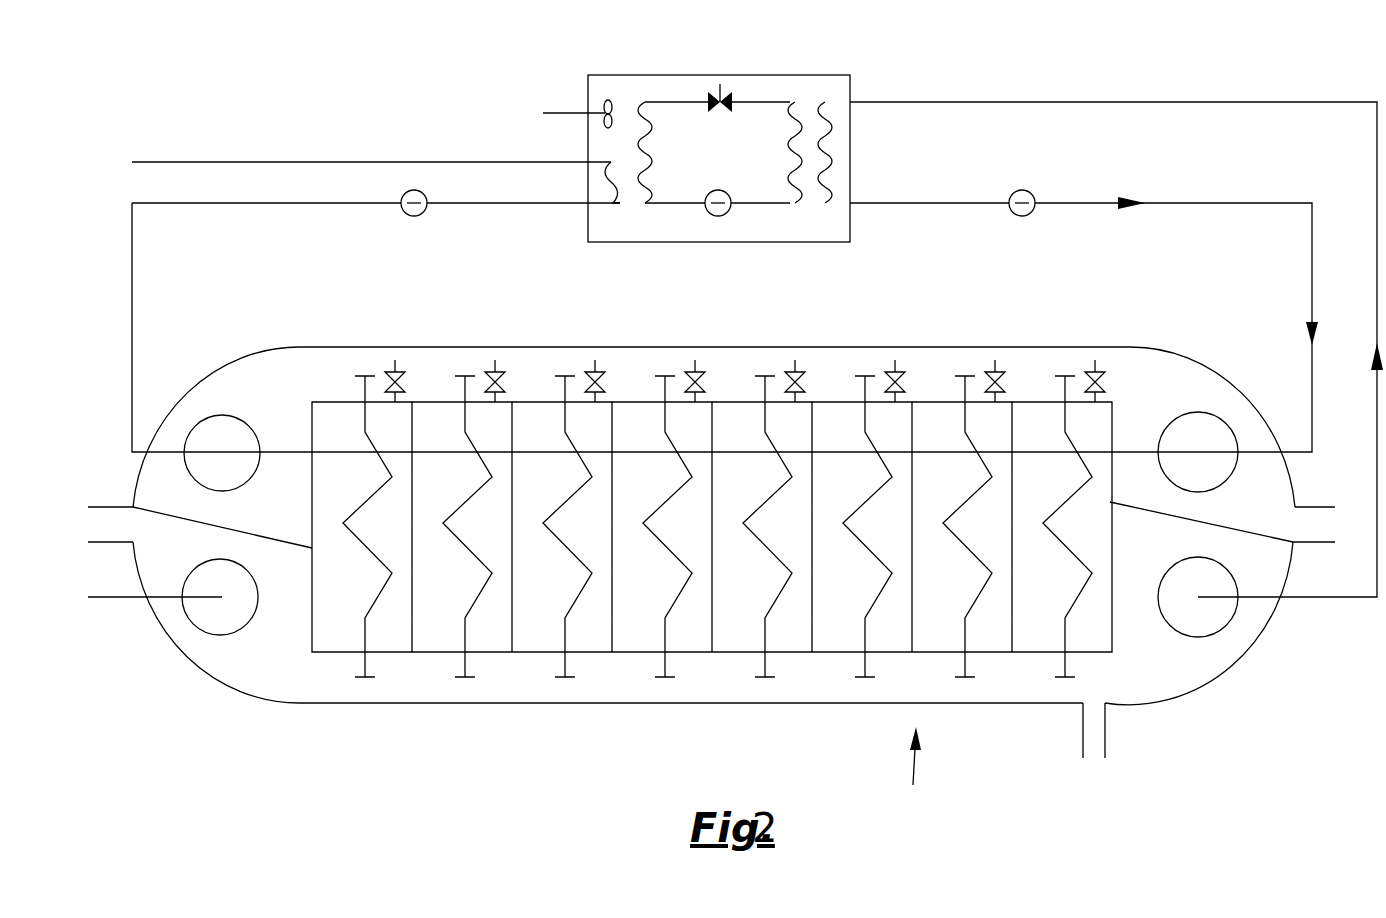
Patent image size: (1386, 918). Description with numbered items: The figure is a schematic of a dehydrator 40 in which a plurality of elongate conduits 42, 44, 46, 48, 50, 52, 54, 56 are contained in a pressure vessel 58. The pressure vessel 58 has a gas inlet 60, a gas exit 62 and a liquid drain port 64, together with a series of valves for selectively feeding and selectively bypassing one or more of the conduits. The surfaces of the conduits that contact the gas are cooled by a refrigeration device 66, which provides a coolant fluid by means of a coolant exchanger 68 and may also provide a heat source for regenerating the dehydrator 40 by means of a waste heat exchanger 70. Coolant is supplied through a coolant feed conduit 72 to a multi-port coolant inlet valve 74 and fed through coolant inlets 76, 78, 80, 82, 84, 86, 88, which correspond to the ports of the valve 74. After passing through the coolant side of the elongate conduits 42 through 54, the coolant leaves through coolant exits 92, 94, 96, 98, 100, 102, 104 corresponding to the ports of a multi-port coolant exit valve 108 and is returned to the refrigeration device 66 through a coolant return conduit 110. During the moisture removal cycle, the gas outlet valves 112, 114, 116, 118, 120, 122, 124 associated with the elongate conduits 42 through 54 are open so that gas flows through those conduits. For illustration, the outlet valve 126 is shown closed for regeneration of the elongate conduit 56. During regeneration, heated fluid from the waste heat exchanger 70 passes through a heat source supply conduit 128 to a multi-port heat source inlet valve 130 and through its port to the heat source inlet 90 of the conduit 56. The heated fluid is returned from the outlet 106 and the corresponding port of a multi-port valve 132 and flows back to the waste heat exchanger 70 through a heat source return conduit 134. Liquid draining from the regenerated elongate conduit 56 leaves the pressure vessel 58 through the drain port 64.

The dehydrator 40 is at (918, 769).
The elongate conduit 42 is at (362, 527).
The elongate conduit 44 is at (462, 527).
The elongate conduit 46 is at (562, 527).
The elongate conduit 48 is at (662, 527).
The elongate conduit 50 is at (762, 527).
The elongate conduit 52 is at (862, 527).
The elongate conduit 54 is at (962, 527).
The elongate conduit 56 is at (762, 527).
The pressure vessel 58 is at (738, 352).
The gas inlet 60 is at (100, 522).
The gas exit 62 is at (1322, 528).
The liquid drain port 64 is at (1090, 748).
The refrigeration device 66 is at (758, 90).
The coolant exchanger 68 is at (809, 184).
The waste heat exchanger 70 is at (628, 182).
The coolant feed conduit 72 is at (925, 203).
The multi-port coolant inlet valve 74 is at (1184, 449).
The coolant inlet 76 is at (1180, 415).
The coolant inlet 78 is at (1215, 403).
The coolant inlet 80 is at (1275, 430).
The coolant inlet 82 is at (1247, 483).
The coolant inlet 84 is at (234, 489).
The coolant inlet 86 is at (196, 500).
The coolant inlet 88 is at (176, 478).
The heat source inlet 90 is at (168, 404).
The coolant exit 92 is at (1181, 562).
The coolant exit 94 is at (1228, 556).
The coolant exit 96 is at (1252, 580).
The coolant exit 98 is at (1270, 625).
The coolant exit 100 is at (242, 630).
The coolant exit 102 is at (209, 632).
The coolant exit 104 is at (140, 615).
The outlet 106 is at (182, 574).
The multi-port coolant exit valve 108 is at (1178, 594).
The coolant return conduit 110 is at (1133, 101).
The gas outlet valve 112 is at (396, 372).
The gas outlet valve 114 is at (496, 372).
The gas outlet valve 116 is at (596, 372).
The gas outlet valve 118 is at (696, 372).
The gas outlet valve 120 is at (796, 372).
The gas outlet valve 122 is at (896, 372).
The gas outlet valve 124 is at (996, 372).
The outlet valve 126 is at (1096, 372).
The heat source supply conduit 128 is at (508, 201).
The multi-port heat source inlet valve 130 is at (203, 450).
The multi-port valve 132 is at (201, 594).
The heat source return conduit 134 is at (395, 162).